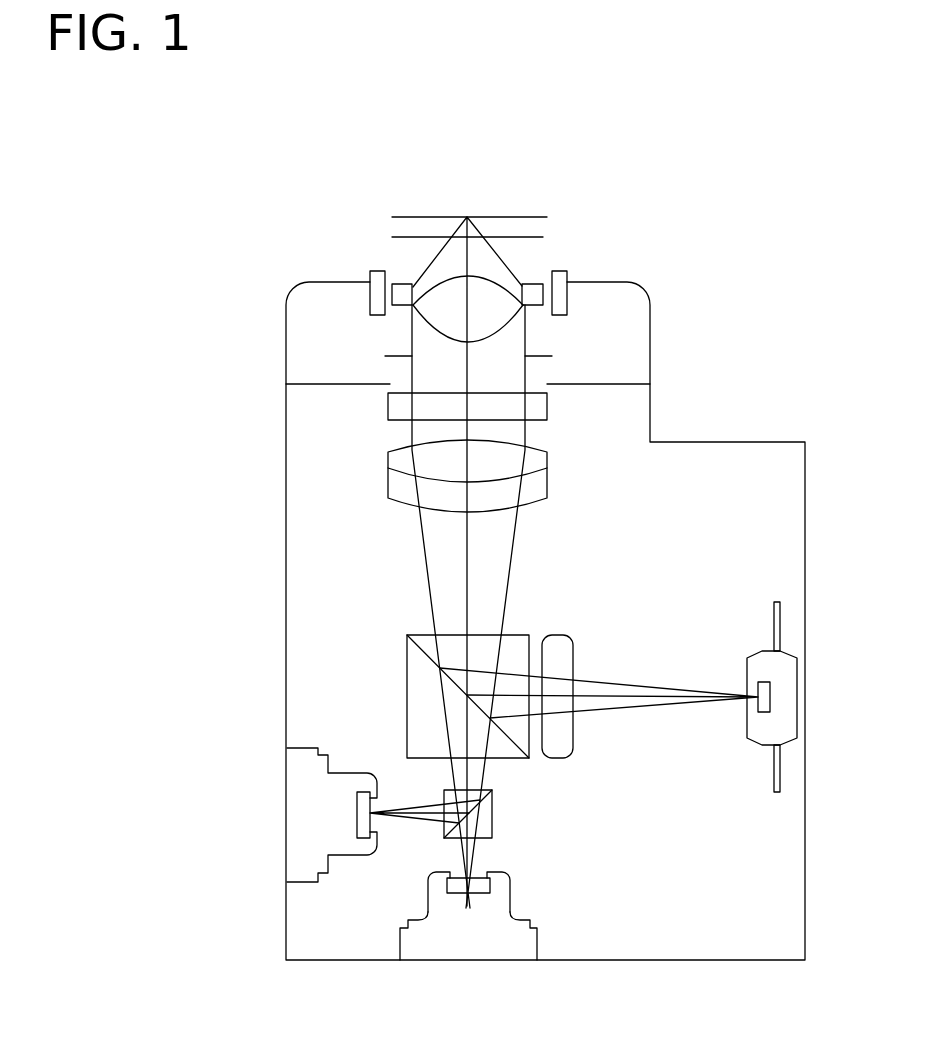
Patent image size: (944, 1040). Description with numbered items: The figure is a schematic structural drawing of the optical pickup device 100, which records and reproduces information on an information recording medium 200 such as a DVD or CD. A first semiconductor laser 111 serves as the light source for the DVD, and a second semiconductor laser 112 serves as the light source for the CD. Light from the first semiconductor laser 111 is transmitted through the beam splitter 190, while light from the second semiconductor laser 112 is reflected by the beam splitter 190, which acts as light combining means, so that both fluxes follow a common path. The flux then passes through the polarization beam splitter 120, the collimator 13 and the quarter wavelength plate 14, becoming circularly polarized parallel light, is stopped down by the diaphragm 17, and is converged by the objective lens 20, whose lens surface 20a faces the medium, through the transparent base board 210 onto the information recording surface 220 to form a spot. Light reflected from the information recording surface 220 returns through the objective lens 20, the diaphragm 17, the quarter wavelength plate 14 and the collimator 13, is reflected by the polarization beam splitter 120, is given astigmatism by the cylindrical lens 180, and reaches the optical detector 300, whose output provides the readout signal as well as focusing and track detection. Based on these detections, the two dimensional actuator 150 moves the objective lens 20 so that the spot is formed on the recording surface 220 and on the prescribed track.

The optical pickup housing 100 is at (741, 419).
The information recording medium 200 is at (481, 180).
The transparent base board 210 is at (532, 228).
The information recording surface 220 is at (495, 215).
The objective lens 20 is at (411, 269).
The objective lens surface 20a is at (430, 330).
The two dimensional actuator 150 is at (596, 299).
The diaphragm 17 is at (547, 357).
The quarter wavelength plate 14 is at (547, 407).
The collimator 13 is at (388, 482).
The polarization beam splitter 120 is at (407, 698).
The cylindrical lens 180 is at (563, 635).
The optical detector 300 is at (803, 702).
The beam splitter 190 is at (492, 815).
The second semiconductor laser 112 is at (327, 812).
The first semiconductor laser 111 is at (470, 920).